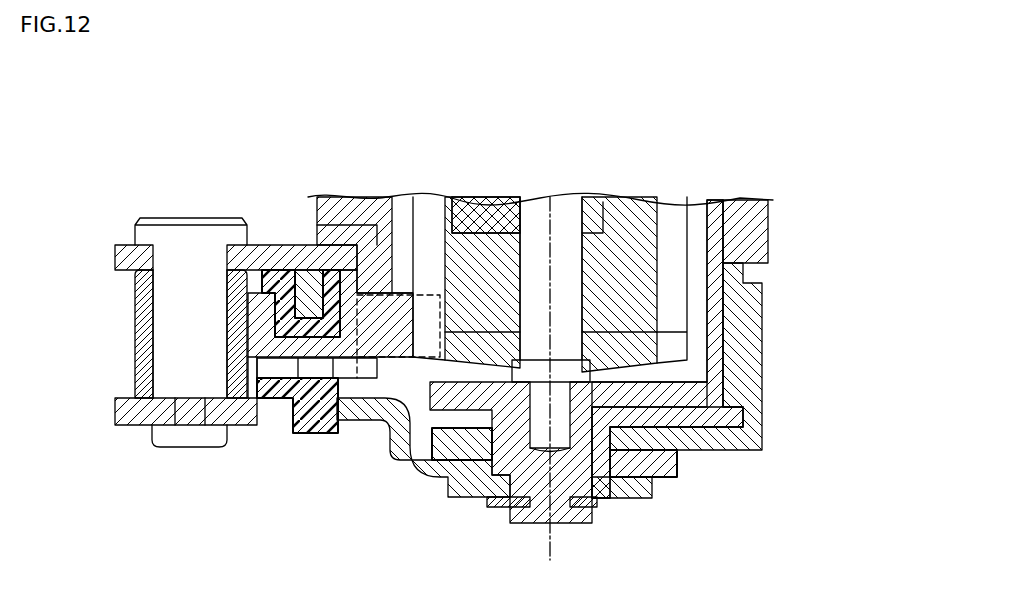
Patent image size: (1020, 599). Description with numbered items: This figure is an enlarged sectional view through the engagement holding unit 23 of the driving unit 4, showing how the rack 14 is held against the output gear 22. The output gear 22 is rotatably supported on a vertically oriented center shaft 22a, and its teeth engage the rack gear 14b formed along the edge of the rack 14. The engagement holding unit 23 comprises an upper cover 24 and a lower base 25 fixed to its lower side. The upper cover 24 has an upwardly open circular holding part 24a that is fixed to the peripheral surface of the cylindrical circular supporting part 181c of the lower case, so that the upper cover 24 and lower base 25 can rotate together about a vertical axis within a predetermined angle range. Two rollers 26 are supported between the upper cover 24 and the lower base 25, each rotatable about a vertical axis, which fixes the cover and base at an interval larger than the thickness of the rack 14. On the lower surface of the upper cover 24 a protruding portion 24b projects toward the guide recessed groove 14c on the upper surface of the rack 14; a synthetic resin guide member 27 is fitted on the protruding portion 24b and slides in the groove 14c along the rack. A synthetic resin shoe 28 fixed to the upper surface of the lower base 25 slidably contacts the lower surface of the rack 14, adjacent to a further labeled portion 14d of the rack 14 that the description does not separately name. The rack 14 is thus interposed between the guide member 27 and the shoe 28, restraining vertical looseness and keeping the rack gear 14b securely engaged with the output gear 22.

The driving unit 4 is at (773, 342).
The rack 14 is at (251, 358).
The rack gear 14b is at (432, 357).
The guide recessed groove 14c is at (283, 300).
The bracket portion 14d is at (247, 325).
The output gear 22 is at (762, 230).
The center shaft 22a is at (582, 257).
The engagement holding unit 23 is at (128, 357).
The upper cover 24 is at (123, 245).
The holding part 24a is at (762, 308).
The protruding portion 24b is at (307, 290).
The lower base 25 is at (437, 476).
The roller 26 is at (135, 377).
The guide member 27 is at (273, 284).
The shoe 28 is at (320, 434).
The circular supporting part 181c is at (742, 366).